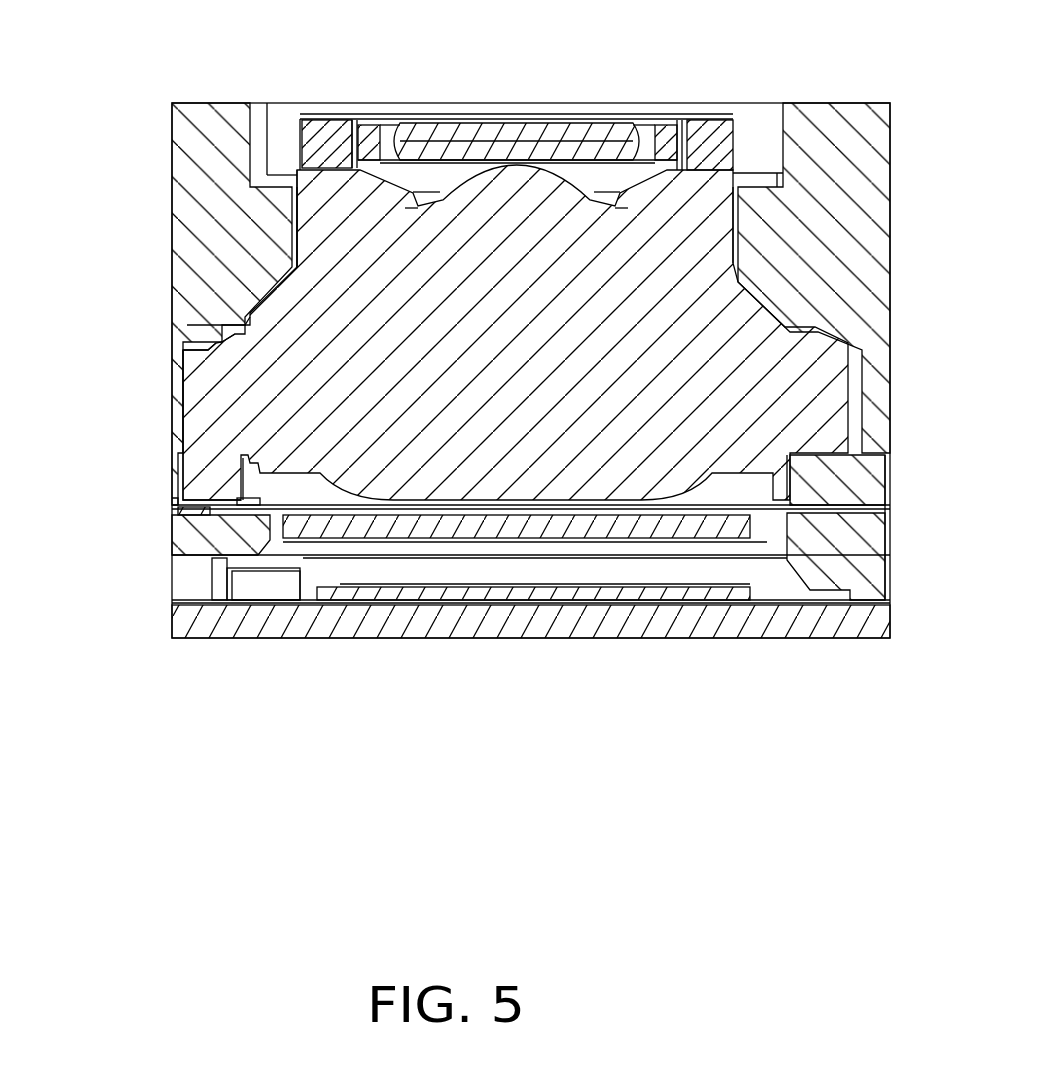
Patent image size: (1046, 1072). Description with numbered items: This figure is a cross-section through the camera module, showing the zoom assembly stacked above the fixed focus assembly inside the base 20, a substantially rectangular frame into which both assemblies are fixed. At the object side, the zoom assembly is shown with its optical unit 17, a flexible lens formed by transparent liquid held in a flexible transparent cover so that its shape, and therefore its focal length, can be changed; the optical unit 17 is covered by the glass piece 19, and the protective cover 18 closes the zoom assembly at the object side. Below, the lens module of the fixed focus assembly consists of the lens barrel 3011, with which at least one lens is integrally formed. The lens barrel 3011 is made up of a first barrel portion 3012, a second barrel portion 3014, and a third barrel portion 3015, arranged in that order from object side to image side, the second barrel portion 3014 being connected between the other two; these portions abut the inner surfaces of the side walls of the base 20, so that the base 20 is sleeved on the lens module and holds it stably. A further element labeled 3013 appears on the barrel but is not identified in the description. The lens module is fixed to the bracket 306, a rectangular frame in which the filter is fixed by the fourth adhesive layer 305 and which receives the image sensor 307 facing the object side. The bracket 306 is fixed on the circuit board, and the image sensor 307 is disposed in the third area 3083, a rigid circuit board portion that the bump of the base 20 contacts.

The optical unit 17 is at (490, 138).
The protective cover 18 is at (648, 118).
The glass piece 19 is at (525, 128).
The base 20 is at (835, 157).
The lens barrel 3011 is at (428, 335).
The first barrel portion 3012 is at (333, 250).
The second lens 3013 is at (220, 387).
The second barrel portion 3014 is at (307, 315).
The third barrel portion 3015 is at (163, 464).
The fourth adhesive layer 305 is at (338, 523).
The bracket 306 is at (213, 543).
The image sensor 307 is at (408, 595).
The third area 3083 is at (542, 612).